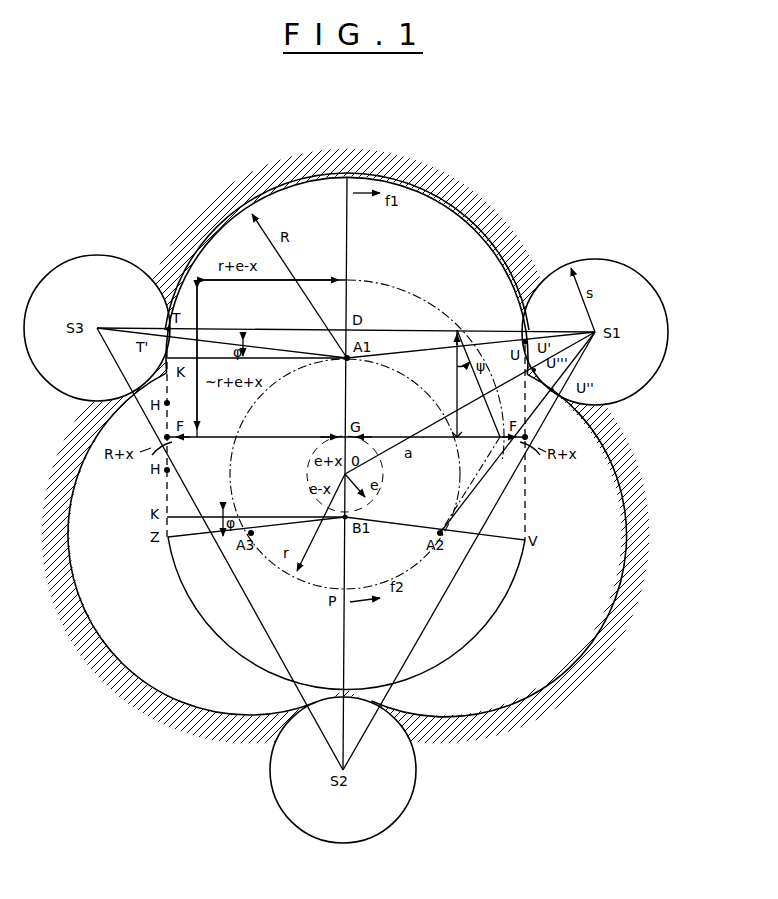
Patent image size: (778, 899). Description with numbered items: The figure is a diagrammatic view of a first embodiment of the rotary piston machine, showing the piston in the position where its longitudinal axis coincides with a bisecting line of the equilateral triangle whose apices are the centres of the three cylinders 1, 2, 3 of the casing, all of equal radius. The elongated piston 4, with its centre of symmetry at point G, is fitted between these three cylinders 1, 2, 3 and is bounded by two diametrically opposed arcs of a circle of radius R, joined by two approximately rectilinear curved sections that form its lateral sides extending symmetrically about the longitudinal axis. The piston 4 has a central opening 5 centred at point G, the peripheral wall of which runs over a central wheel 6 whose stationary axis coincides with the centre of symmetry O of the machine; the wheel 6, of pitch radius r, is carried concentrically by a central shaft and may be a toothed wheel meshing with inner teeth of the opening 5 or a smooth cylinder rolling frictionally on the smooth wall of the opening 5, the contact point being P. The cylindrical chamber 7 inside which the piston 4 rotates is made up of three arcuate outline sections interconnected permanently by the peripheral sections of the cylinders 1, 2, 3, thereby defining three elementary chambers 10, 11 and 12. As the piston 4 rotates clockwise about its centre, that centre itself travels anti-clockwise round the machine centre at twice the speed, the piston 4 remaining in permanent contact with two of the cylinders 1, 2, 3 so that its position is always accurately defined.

The cylinder 1 is at (636, 286).
The cylinder 2 is at (318, 826).
The cylinder 3 is at (87, 265).
The piston 4 is at (347, 275).
The opening 5 is at (440, 311).
The central wheel 6 is at (422, 396).
The cylindrical chamber 7 is at (472, 202).
The elementary chamber 10 is at (432, 187).
The elementary chamber 11 is at (522, 685).
The elementary chamber 12 is at (128, 642).